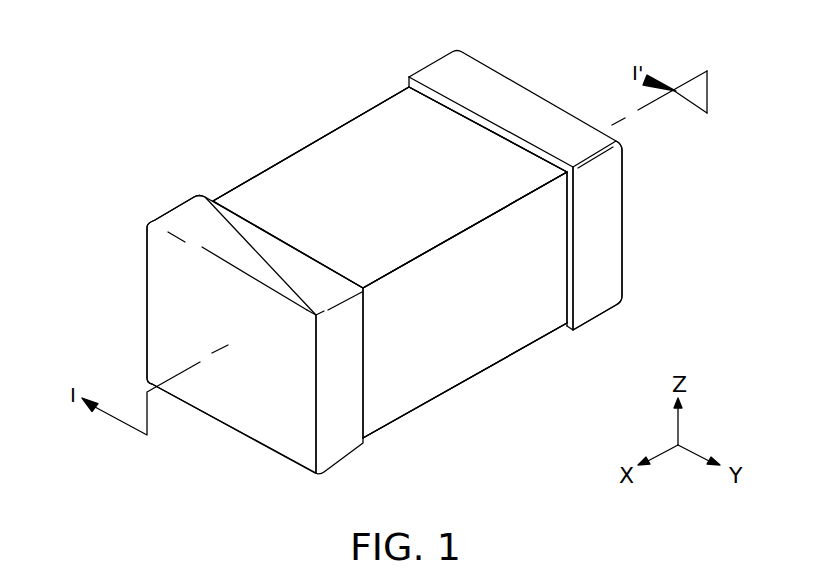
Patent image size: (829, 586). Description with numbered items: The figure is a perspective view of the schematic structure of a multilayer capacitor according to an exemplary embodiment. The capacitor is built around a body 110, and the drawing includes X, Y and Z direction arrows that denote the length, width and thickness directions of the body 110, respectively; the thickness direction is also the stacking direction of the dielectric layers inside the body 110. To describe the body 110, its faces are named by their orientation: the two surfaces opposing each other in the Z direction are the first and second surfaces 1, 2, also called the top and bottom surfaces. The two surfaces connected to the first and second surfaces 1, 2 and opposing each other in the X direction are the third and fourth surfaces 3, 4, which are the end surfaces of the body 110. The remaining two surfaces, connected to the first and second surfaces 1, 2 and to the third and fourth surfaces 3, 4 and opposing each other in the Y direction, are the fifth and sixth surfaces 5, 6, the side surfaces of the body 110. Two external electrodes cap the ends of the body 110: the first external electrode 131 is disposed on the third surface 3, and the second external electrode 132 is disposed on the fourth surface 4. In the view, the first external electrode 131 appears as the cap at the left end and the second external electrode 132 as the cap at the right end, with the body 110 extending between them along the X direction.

The first surface 1 is at (403, 388).
The second surface 2 is at (272, 163).
The third surface 3 is at (254, 395).
The fourth surface 4 is at (606, 230).
The fifth surface 5 is at (455, 358).
The sixth surface 6 is at (362, 145).
The body 110 is at (317, 158).
The first external electrode 131 is at (176, 204).
The second external electrode 132 is at (513, 78).